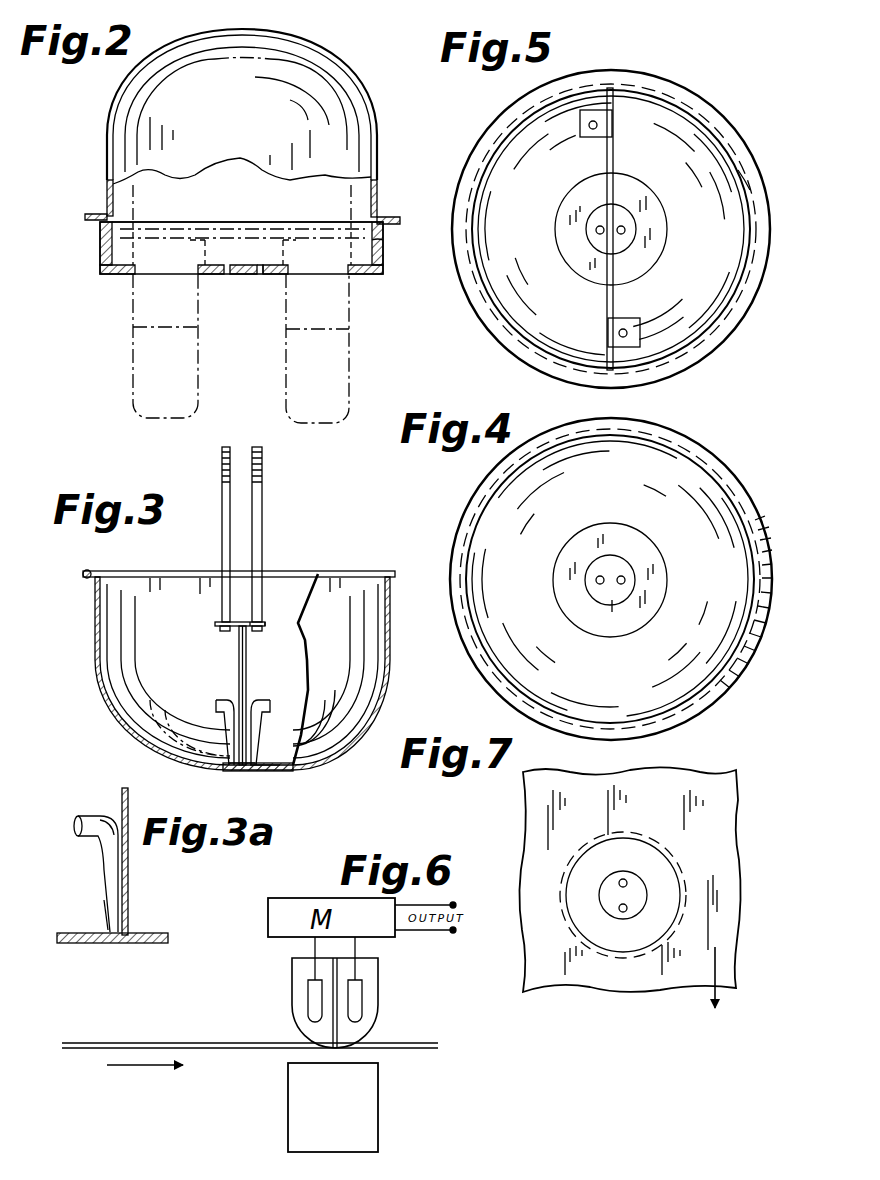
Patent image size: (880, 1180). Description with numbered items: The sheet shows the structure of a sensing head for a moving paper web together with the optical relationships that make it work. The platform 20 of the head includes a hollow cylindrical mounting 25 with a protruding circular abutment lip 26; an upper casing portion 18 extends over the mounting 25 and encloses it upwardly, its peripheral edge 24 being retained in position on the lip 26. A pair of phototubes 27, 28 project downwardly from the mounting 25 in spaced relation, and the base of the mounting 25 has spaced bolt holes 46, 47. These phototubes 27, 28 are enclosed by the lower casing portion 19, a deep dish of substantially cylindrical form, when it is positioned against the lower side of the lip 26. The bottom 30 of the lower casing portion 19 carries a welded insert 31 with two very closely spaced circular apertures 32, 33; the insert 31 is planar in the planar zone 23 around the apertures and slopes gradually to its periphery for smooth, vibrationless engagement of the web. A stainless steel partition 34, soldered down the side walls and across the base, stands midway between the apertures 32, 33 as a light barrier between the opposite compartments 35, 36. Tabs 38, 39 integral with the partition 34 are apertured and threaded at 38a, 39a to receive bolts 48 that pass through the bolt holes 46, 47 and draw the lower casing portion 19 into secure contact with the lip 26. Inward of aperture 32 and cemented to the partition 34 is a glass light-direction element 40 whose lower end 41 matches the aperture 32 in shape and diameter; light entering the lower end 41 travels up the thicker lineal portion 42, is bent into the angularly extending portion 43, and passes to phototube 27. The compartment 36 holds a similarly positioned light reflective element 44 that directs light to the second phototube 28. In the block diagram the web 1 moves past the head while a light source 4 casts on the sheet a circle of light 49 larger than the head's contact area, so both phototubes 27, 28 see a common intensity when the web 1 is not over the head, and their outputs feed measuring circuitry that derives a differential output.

In FIG. 7, the web 1 is at (556, 982).
In FIG. 6, the light source 4 is at (340, 1111).
In FIG. 2, the casing portion 18 is at (250, 121).
In FIG. 5, the lower casing portion 19 is at (497, 122).
In FIG. 4, the lower casing portion 19 is at (480, 494).
In FIG. 3, the lower casing portion 19 is at (96, 627).
In FIG. 2, the platform 20 is at (100, 250).
In FIG. 5, the planar zone 23 is at (630, 228).
In FIG. 4, the planar zone 23 is at (611, 557).
In FIG. 7, the planar zone 23 is at (638, 895).
In FIG. 2, the peripheral edge 24 is at (98, 214).
In FIG. 2, the hollow cylindrical mounting 25 is at (374, 242).
In FIG. 2, the circular abutment lip 26 is at (86, 226).
In FIG. 2, the phototube 27 is at (134, 354).
In FIG. 6, the phototube 27 is at (314, 998).
In FIG. 2, the phototube 28 is at (287, 354).
In FIG. 6, the phototube 28 is at (361, 998).
In FIG. 5, the bottom 30 is at (585, 315).
In FIG. 4, the bottom 30 is at (590, 682).
In FIG. 3, the bottom 30 is at (121, 735).
In FIG. 5, the insert 31 is at (655, 187).
In FIG. 4, the insert 31 is at (640, 547).
In FIG. 3, the insert 31 is at (260, 765).
In FIG. 7, the insert 31 is at (630, 938).
In FIG. 5, the aperture 32 is at (600, 226).
In FIG. 4, the aperture 32 is at (600, 579).
In FIG. 3, the aperture 32 is at (228, 770).
In FIG. 3A, the aperture 32 is at (110, 945).
In FIG. 7, the aperture 32 is at (620, 884).
In FIG. 5, the aperture 33 is at (622, 236).
In FIG. 4, the aperture 33 is at (622, 588).
In FIG. 3, the aperture 33 is at (253, 770).
In FIG. 7, the aperture 33 is at (622, 911).
In FIG. 5, the partition 34 is at (614, 157).
In FIG. 3, the partition 34 is at (239, 660).
In FIG. 3A, the partition 34 is at (128, 892).
In FIG. 3, the compartment 35 is at (121, 665).
In FIG. 5, the compartment 36 is at (740, 172).
In FIG. 3, the compartment 36 is at (301, 652).
In FIG. 5, the tab 38 is at (593, 140).
In FIG. 3, the tab 38 is at (216, 625).
In FIG. 5, the threaded aperture 38a is at (598, 123).
In FIG. 5, the tab 39 is at (610, 342).
In FIG. 3, the tab 39 is at (264, 622).
In FIG. 5, the threaded aperture 39a is at (645, 306).
In FIG. 3, the light-direction element 40 is at (223, 702).
In FIG. 3A, the light-direction element 40 is at (101, 870).
In FIG. 3A, the lower end 41 is at (105, 915).
In FIG. 3A, the lineal portion 42 is at (100, 846).
In FIG. 3A, the angularly extending portion 43 is at (80, 814).
In FIG. 3, the light reflective element 44 is at (252, 702).
In FIG. 2, the bolt hole 46 is at (226, 275).
In FIG. 2, the bolt hole 47 is at (260, 275).
In FIG. 3, the bolts 48 is at (230, 512).
In FIG. 7, the circle of light 49 is at (648, 838).